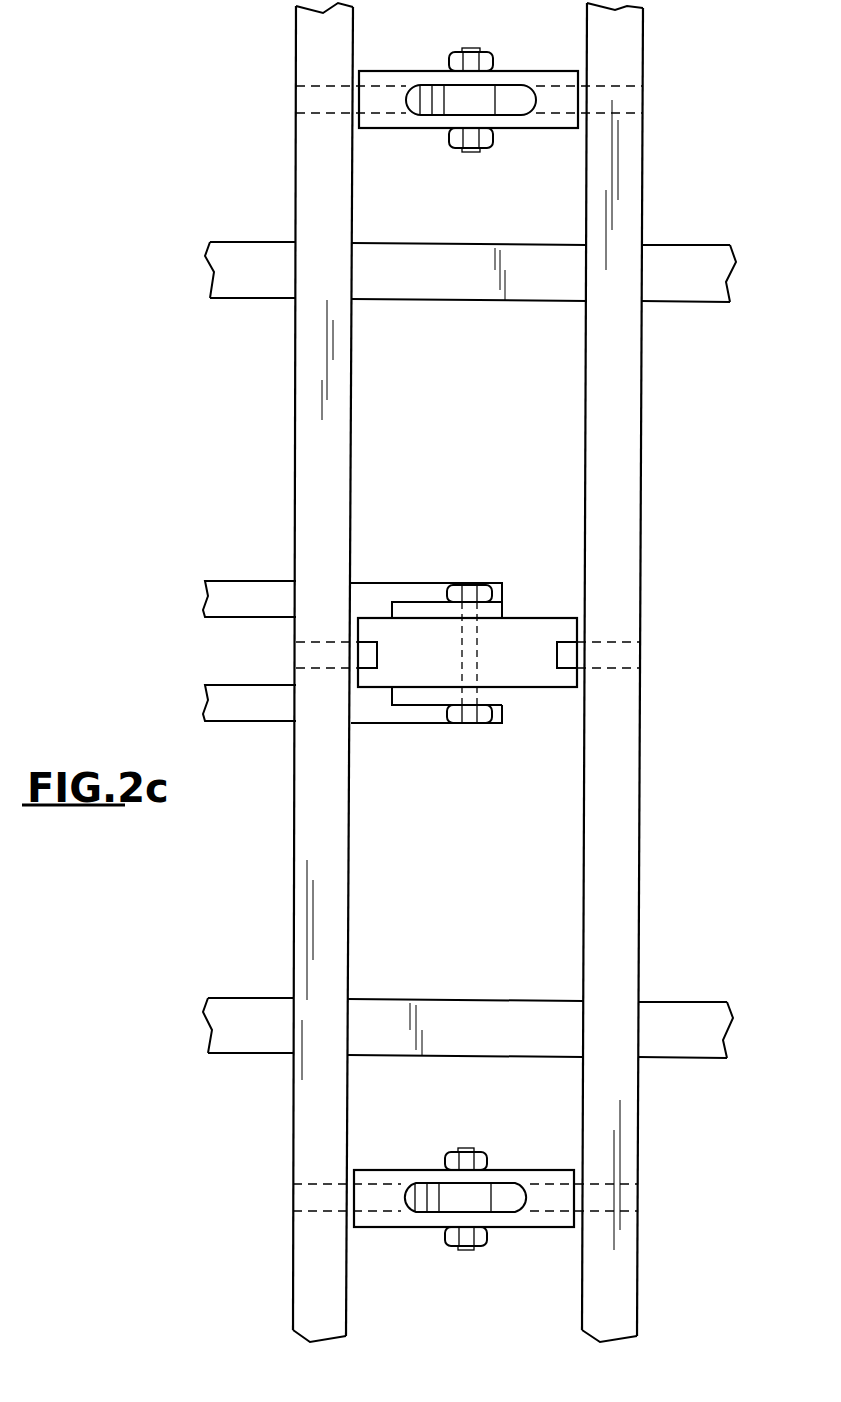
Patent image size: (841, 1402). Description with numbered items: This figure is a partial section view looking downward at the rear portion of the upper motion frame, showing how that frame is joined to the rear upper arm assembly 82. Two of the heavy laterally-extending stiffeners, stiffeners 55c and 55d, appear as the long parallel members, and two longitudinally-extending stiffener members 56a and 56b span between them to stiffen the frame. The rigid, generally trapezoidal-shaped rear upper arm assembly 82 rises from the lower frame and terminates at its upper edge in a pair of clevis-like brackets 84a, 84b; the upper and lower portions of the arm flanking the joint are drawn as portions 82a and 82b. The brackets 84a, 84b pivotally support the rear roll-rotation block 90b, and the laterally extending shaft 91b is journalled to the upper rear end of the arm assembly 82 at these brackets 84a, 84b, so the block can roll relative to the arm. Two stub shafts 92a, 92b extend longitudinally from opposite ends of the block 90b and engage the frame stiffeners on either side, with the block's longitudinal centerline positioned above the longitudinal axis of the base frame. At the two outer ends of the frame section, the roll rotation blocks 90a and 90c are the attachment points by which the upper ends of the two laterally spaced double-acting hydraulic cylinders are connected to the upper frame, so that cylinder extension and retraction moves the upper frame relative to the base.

The laterally-extending stiffener 55c is at (310, 922).
The laterally-extending stiffener 55d is at (620, 416).
The longitudinally-extending stiffener member 56a is at (437, 1010).
The longitudinally-extending stiffener member 56b is at (393, 288).
The rear upper arm assembly 82 is at (213, 603).
The upper brace portion 82a is at (362, 592).
The lower brace portion 82b is at (373, 708).
The clevis-like bracket 84a is at (440, 713).
The clevis-like bracket 84b is at (427, 610).
The roll rotation block 90a is at (368, 1175).
The rear roll-rotation block 90b is at (545, 680).
The roll rotation block 90c is at (372, 77).
The shaft 91b is at (473, 636).
The stub shaft 92a is at (303, 655).
The stub shaft 92b is at (618, 653).